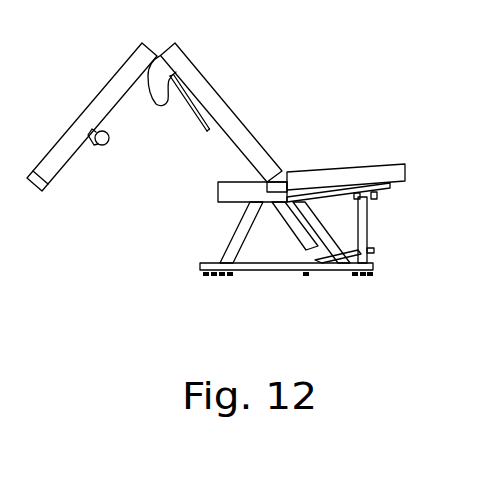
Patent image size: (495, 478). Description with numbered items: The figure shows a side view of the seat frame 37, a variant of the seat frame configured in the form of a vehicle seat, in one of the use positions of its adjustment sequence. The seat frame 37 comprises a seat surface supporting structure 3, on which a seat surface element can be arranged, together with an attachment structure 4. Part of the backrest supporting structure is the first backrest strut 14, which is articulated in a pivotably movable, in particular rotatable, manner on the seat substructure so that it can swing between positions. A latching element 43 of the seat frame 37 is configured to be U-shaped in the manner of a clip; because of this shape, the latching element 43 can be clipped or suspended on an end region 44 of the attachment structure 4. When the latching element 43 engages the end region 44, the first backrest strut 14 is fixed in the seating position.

The seat surface supporting structure 3 is at (416, 164).
The attachment structure 4 is at (390, 187).
The first backrest strut 14 is at (220, 143).
The seat frame 37 is at (264, 284).
The latching element 43 is at (53, 198).
The end region 44 is at (206, 204).